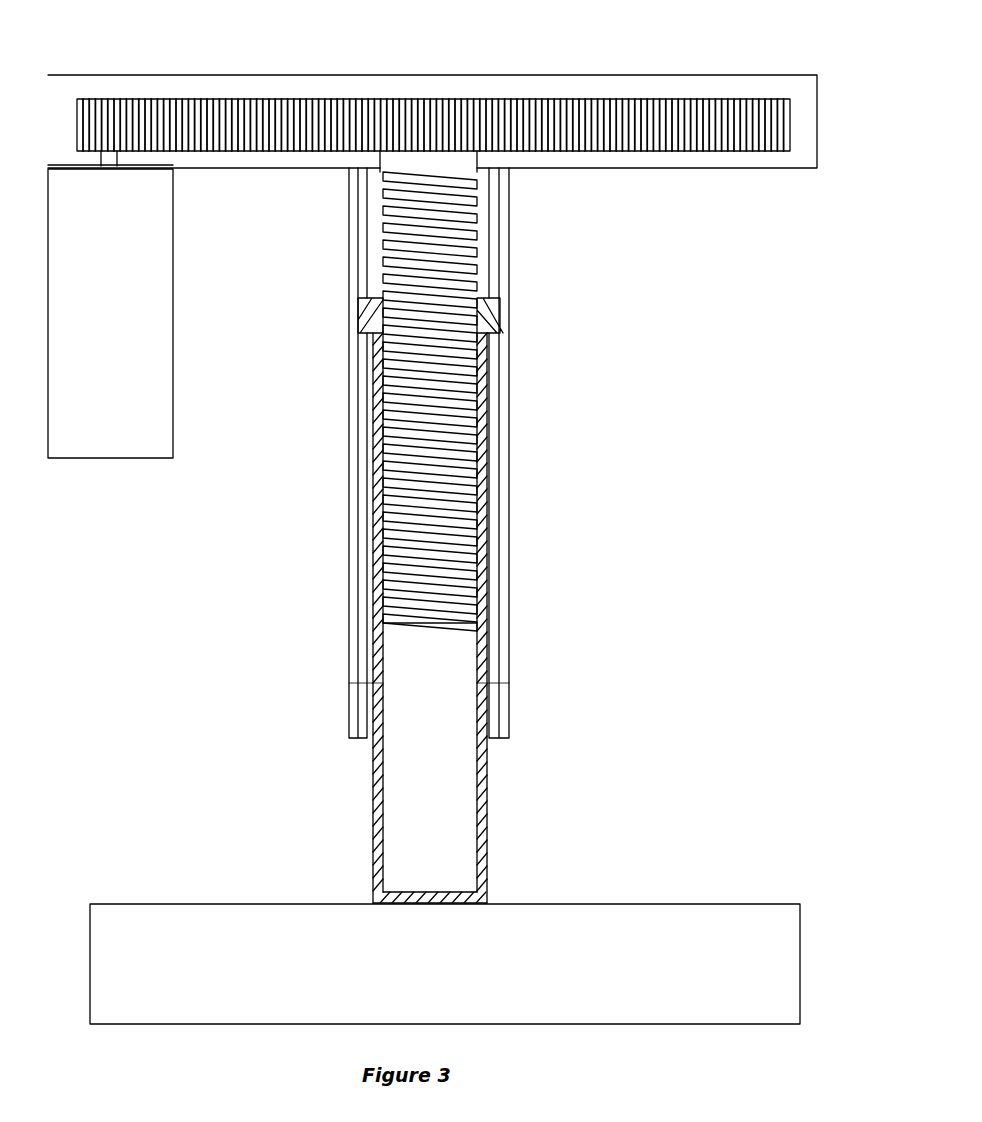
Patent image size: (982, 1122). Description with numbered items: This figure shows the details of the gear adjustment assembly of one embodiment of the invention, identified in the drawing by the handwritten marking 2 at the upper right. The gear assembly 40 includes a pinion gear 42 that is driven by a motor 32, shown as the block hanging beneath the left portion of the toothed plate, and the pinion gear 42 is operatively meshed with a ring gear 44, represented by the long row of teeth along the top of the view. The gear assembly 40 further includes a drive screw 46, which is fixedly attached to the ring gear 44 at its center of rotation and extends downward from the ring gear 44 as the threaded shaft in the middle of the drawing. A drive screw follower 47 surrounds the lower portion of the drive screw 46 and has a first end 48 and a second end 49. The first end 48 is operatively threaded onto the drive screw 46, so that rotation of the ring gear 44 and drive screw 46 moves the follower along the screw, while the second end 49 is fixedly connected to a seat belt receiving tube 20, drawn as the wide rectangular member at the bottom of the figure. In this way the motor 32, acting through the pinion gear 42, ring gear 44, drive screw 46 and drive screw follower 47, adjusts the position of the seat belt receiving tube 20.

The lifting apparatus 2 is at (612, 6).
The seat belt receiving tube 20 is at (572, 922).
The motor 32 is at (107, 433).
The gear assembly 40 is at (578, 320).
The pinion gear 42 is at (113, 97).
The ring gear 44 is at (455, 97).
The drive screw 46 is at (458, 234).
The drive screw follower 47 is at (478, 539).
The first end 48 is at (488, 317).
The second end 49 is at (481, 900).